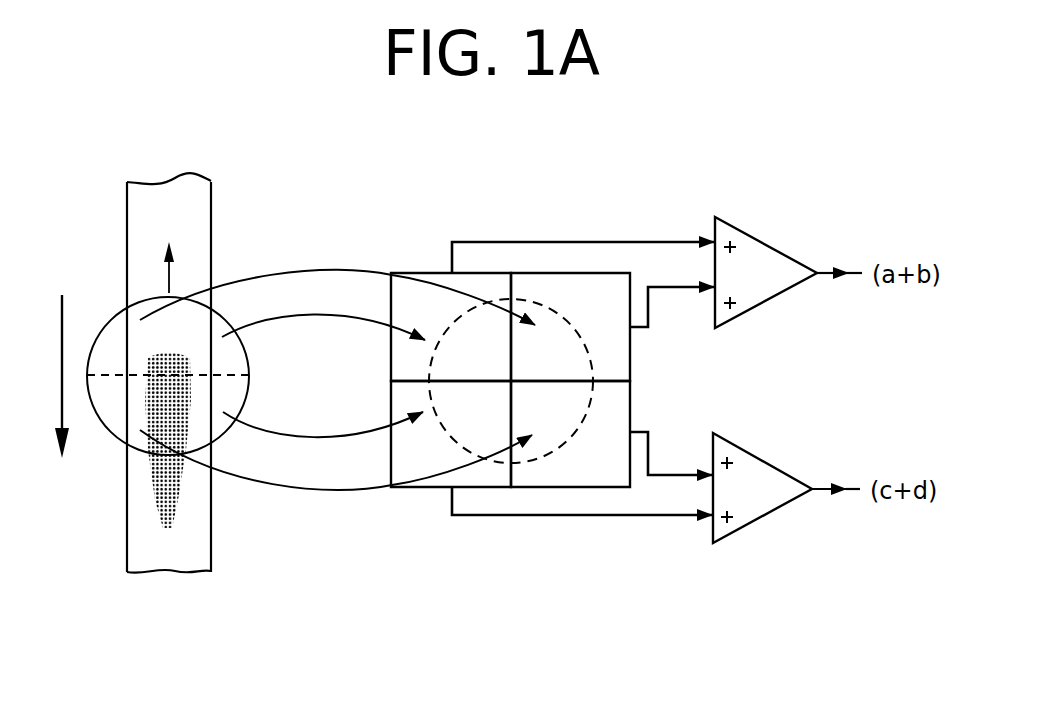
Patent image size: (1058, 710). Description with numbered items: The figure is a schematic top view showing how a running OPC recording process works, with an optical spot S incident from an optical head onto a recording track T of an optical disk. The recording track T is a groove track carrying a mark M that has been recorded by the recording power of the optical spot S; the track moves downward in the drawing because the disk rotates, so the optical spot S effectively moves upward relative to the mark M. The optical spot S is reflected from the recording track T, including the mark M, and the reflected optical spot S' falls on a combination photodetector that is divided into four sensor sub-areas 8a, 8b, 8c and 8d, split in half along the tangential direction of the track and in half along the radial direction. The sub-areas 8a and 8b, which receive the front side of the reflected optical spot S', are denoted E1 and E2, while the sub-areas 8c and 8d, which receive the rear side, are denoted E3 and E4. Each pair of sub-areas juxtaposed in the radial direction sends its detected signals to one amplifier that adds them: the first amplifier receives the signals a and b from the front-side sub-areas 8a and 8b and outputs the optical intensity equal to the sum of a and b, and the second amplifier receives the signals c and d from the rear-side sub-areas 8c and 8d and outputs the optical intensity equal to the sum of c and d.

The recording track T is at (212, 210).
The optical spot S is at (200, 376).
The mark M is at (150, 487).
The reflected optical spot S' is at (561, 381).
The sensor sub-area 8a is at (420, 272).
The sensor sub-area 8b is at (585, 272).
The sensor sub-area 8c is at (568, 488).
The sensor sub-area 8d is at (420, 488).
The front-side sub-area designation E1 is at (477, 355).
The front-side sub-area designation E2 is at (548, 355).
The rear-side sub-area designation E3 is at (547, 415).
The rear-side sub-area designation E4 is at (473, 415).
The optical signal a is at (583, 242).
The optical signal b is at (672, 307).
The optical signal c is at (671, 453).
The optical signal d is at (582, 520).